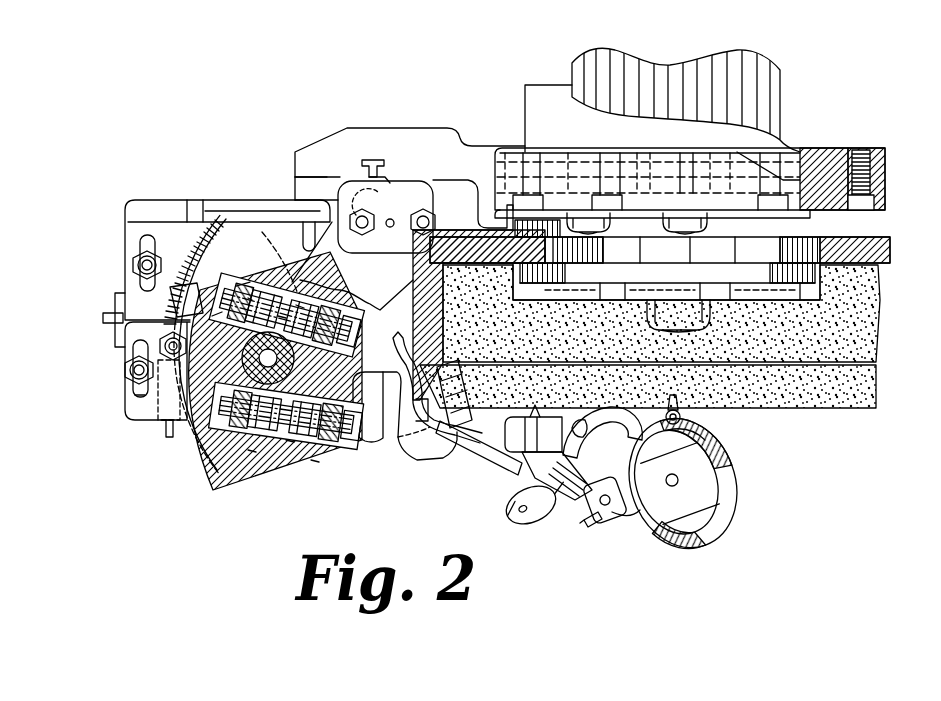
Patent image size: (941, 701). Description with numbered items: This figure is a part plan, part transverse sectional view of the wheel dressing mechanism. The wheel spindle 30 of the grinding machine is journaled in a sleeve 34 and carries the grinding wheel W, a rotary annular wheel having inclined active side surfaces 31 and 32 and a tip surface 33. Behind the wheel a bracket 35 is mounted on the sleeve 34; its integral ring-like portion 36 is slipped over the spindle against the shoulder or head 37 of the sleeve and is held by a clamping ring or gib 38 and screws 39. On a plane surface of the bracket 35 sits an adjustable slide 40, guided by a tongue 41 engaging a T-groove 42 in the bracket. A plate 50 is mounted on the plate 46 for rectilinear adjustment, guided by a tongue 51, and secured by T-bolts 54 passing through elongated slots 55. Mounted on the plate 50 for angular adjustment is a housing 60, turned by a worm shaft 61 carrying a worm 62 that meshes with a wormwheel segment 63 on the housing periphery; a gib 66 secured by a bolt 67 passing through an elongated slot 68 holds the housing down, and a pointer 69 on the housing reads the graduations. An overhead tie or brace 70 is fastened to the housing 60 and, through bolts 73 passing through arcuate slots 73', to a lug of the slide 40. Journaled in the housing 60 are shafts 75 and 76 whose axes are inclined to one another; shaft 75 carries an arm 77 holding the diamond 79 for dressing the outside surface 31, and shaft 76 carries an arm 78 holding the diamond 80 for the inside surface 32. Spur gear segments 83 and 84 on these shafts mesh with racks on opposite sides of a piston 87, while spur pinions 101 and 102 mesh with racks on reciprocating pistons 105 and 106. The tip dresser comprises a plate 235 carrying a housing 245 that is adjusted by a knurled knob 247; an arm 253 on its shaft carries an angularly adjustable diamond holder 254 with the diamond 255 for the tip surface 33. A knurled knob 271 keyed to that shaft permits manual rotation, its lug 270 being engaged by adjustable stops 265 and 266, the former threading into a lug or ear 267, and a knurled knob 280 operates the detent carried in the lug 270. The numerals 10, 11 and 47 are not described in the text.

The carriage unit 10 is at (322, 306).
The shaft 11 is at (250, 295).
The wheel spindle 30 is at (770, 105).
The outside active side surface 31 is at (437, 383).
The inside active side surface 32 is at (875, 397).
The tip surface 33 is at (808, 398).
The sleeve 34 is at (540, 108).
The bracket 35 is at (414, 138).
The ring-like portion 36 is at (882, 195).
The shoulder or head 37 is at (812, 150).
The clamping ring or gib 38 is at (882, 160).
The screws 39 is at (868, 207).
The slide 40 is at (300, 186).
The tongue 41 is at (378, 172).
The T-groove 42 is at (372, 162).
The plate 46 is at (240, 205).
The stud 47 is at (110, 320).
The plate 50 is at (162, 222).
The tongue 51 is at (197, 200).
The T-bolts 54 is at (140, 270).
The elongated slots 55 is at (310, 238).
The housing 60 is at (215, 490).
The worm shaft 61 is at (165, 430).
The worm 62 is at (138, 393).
The wormwheel segment 63 is at (192, 458).
The gib 66 is at (272, 232).
The bolt 67 is at (137, 372).
The elongated slot 68 is at (137, 347).
The pointer 69 is at (192, 284).
The overhead tie or brace 70 is at (385, 290).
The bolts 73 is at (386, 217).
The arcuate slots 73' is at (380, 201).
The shaft 75 is at (290, 440).
The shaft 76 is at (282, 316).
The arm 77 is at (372, 435).
The arm 78 is at (405, 450).
The diamond 79 is at (426, 410).
The diamond 80 is at (454, 394).
The spur gear segment 83 is at (315, 460).
The spur gear segment 84 is at (300, 304).
The piston 87 is at (268, 358).
The spur pinion 101 is at (252, 450).
The spur pinion 102 is at (243, 286).
The piston 105 is at (196, 416).
The piston 106 is at (215, 318).
The plate 235 is at (485, 445).
The housing 245 is at (592, 508).
The knurled knob 247 is at (540, 520).
The arm 253 is at (555, 450).
The diamond holder 254 is at (535, 442).
The diamond 255 is at (530, 418).
The adjustable stop 265 is at (600, 522).
The adjustable stop 266 is at (690, 412).
The lug or ear 267 is at (622, 515).
The lug 270 is at (712, 455).
The knurled knob 271 is at (708, 522).
The knurled knob 280 is at (700, 495).
The grinding wheel W is at (875, 327).